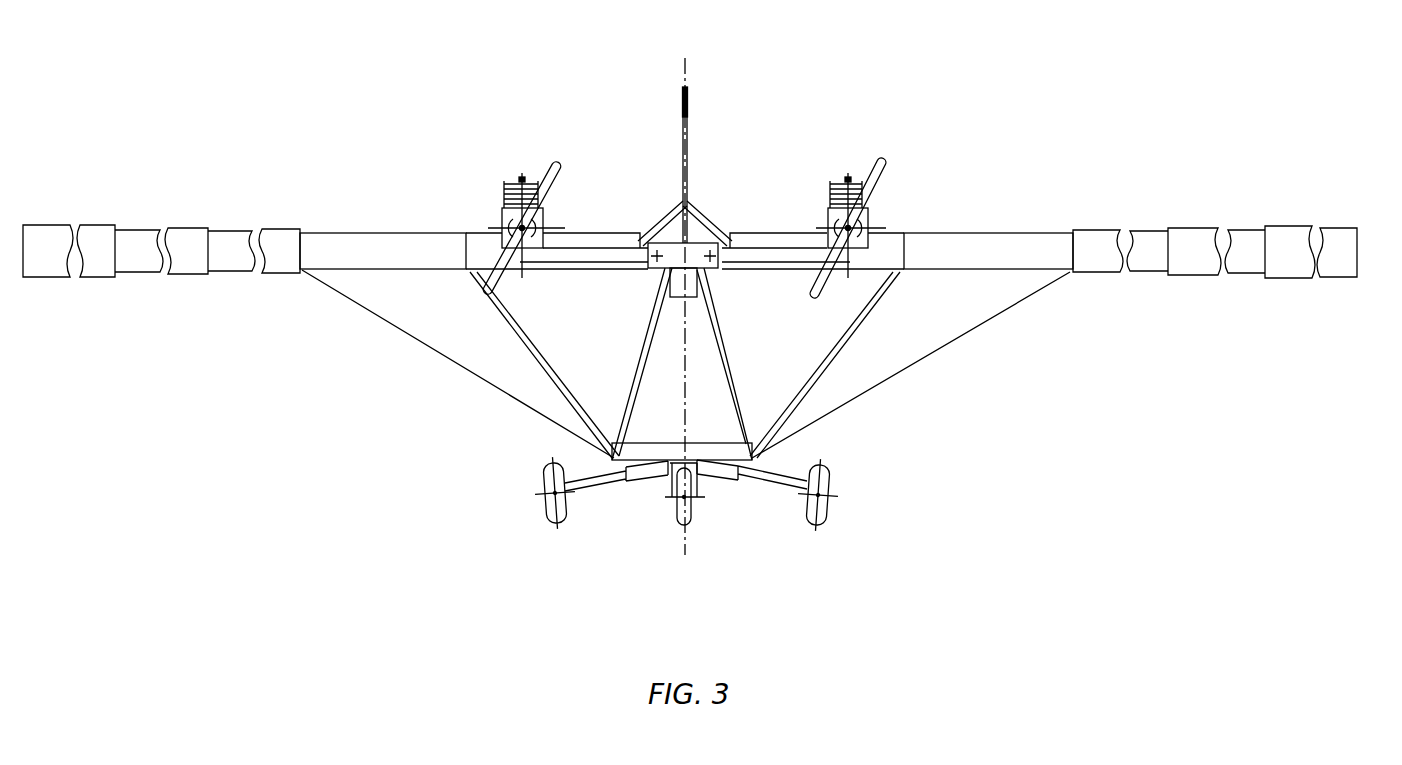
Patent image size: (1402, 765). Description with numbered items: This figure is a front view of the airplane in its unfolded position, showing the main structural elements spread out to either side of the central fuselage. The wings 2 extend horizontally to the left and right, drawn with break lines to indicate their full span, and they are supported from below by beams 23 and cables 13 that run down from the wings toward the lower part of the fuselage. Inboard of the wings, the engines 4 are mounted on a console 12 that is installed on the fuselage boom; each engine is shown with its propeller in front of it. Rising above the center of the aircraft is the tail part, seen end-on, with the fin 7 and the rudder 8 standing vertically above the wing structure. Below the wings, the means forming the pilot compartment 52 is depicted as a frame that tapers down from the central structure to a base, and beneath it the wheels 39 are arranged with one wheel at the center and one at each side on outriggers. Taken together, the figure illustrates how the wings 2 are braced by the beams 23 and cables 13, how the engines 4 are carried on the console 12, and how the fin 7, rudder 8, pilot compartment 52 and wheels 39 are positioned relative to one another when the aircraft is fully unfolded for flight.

The wings 2 is at (466, 232).
The engines 4 is at (523, 183).
The fin 7 is at (714, 131).
The rudder 8 is at (685, 177).
The console 12 is at (612, 258).
The cables 13 is at (448, 357).
The beams 23 is at (552, 373).
The wheels 39 is at (565, 508).
The pilot compartment 52 is at (675, 358).